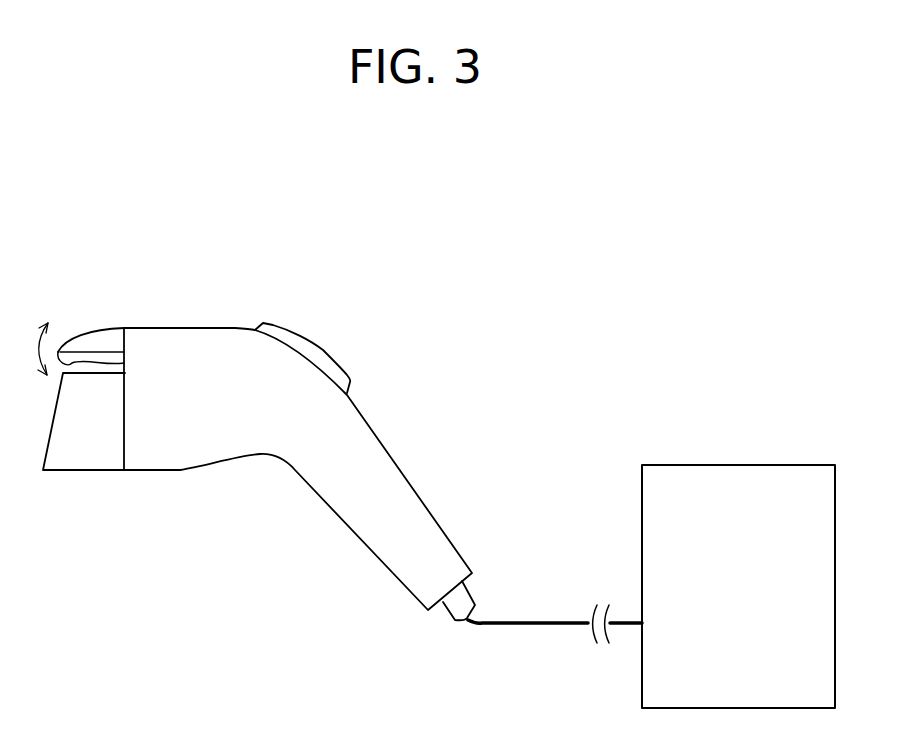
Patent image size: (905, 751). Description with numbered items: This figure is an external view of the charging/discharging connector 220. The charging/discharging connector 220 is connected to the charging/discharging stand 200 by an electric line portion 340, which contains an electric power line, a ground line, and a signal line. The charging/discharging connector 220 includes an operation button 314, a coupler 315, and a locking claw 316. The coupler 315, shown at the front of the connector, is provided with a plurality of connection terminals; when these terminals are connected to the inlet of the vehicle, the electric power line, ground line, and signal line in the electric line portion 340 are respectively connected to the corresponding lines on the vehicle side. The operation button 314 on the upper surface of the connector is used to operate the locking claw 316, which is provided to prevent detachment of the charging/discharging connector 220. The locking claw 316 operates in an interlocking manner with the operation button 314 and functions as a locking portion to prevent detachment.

The charging/discharging stand 200 is at (782, 463).
The charging/discharging connector 220 is at (418, 483).
The operation button 314 is at (298, 333).
The coupler 315 is at (82, 470).
The locking claw 316 is at (78, 332).
The electric line portion 340 is at (544, 620).